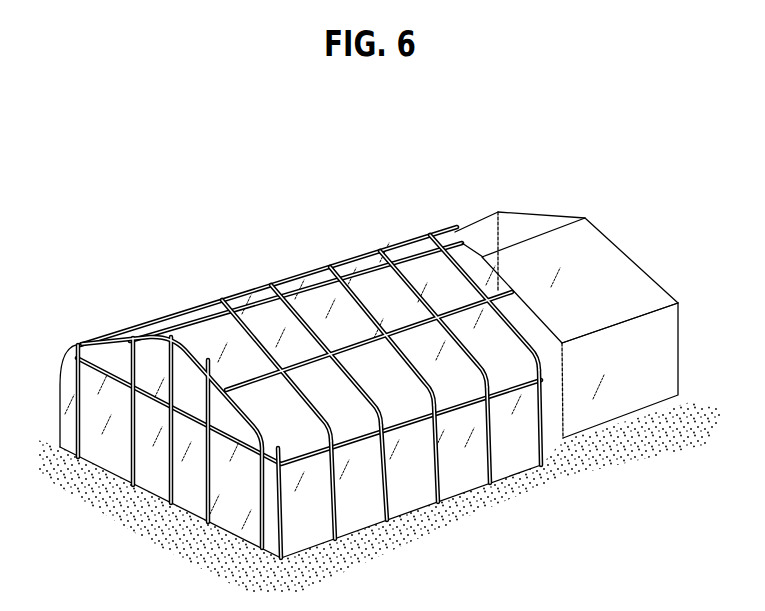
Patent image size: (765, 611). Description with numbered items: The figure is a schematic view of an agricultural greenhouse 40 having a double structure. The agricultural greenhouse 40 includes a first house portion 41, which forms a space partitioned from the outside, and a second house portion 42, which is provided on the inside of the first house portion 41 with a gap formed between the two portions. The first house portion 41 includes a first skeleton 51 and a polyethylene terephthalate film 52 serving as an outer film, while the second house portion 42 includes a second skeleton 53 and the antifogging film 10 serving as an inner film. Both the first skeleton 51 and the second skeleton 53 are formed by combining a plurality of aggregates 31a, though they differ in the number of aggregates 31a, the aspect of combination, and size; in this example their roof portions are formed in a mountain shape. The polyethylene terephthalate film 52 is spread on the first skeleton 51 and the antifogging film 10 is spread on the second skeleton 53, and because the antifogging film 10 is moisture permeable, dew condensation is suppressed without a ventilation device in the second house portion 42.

The antifogging film 10 is at (625, 283).
The aggregates 31a is at (255, 283).
The agricultural greenhouse 40 is at (185, 222).
The first house portion 41 is at (140, 328).
The second house portion 42 is at (467, 216).
The first skeleton 51 is at (450, 485).
The polyethylene terephthalate film 52 is at (177, 322).
The second skeleton 53 is at (607, 332).